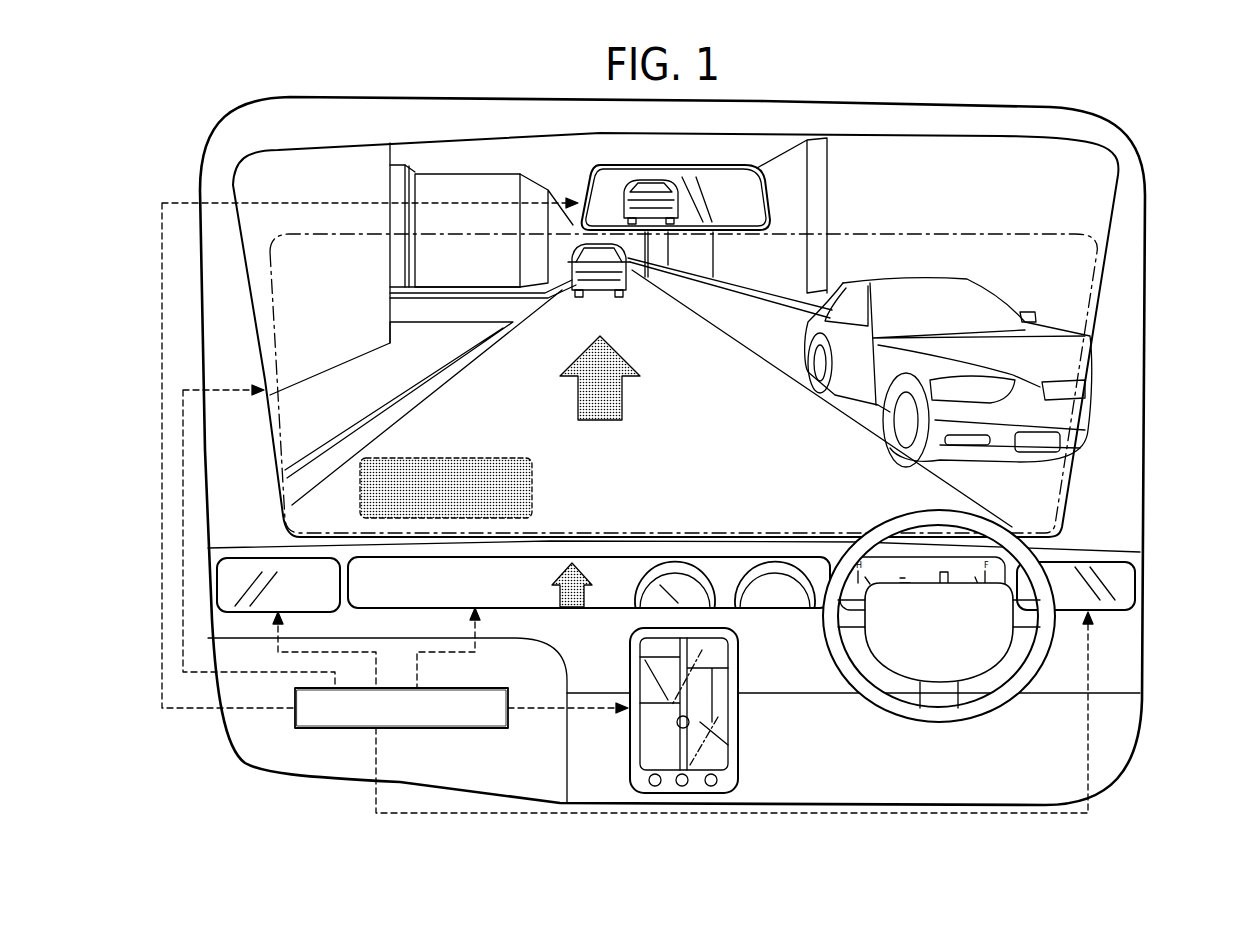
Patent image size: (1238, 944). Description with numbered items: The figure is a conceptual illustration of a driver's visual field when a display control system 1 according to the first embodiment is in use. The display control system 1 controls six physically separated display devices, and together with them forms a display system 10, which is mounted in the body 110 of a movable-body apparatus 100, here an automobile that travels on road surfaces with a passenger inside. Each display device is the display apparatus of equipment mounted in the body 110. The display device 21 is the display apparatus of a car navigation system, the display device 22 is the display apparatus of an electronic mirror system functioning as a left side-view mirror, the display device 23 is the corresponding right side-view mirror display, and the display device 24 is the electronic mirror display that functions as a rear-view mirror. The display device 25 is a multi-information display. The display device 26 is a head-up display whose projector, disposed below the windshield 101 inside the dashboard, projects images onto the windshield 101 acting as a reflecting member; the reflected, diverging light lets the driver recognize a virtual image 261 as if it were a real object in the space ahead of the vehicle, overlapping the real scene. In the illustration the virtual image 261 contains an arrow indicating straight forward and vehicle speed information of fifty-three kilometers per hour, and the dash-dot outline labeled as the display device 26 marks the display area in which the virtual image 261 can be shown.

The movable-body apparatus 100 is at (206, 131).
The body 110 is at (200, 171).
The windshield 101 is at (1088, 215).
The display device 26 is at (881, 234).
The display device 24 is at (602, 180).
The display device 22 is at (232, 572).
The display device 23 is at (1080, 568).
The display device 25 is at (548, 608).
The display device 21 is at (720, 750).
The virtual image 261 is at (463, 462).
The display system 10 is at (285, 714).
The display control system 1 is at (332, 728).